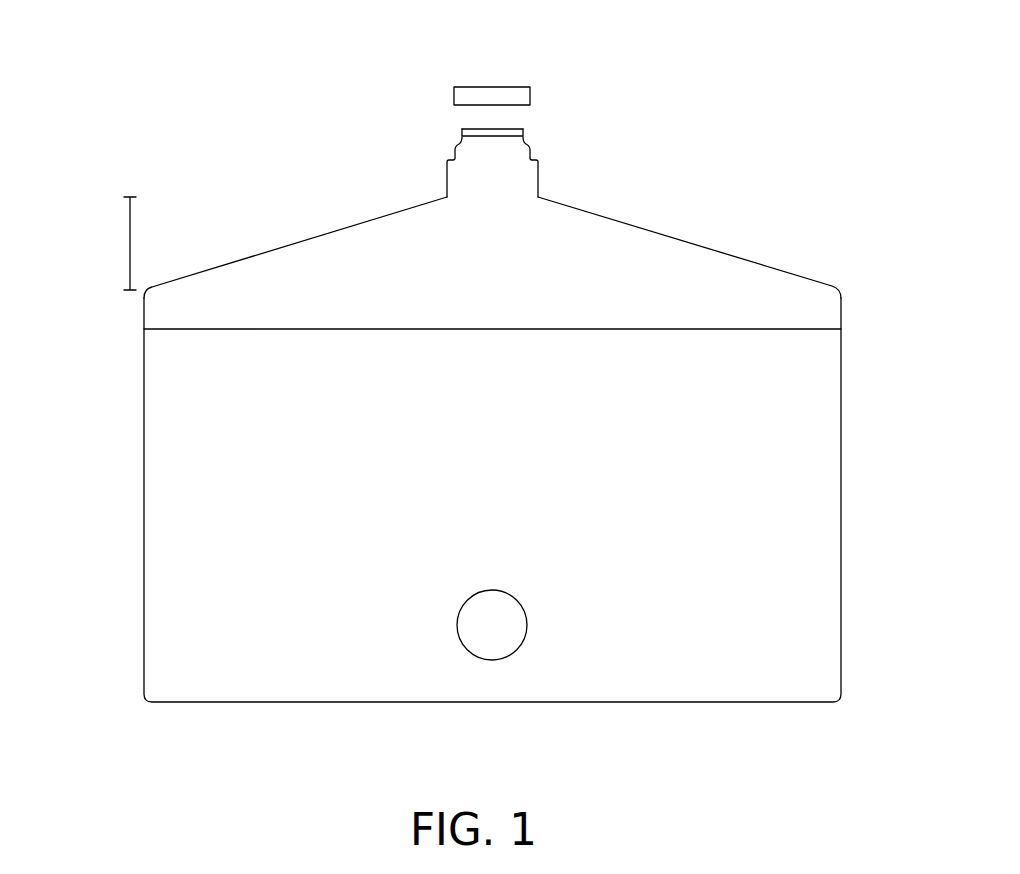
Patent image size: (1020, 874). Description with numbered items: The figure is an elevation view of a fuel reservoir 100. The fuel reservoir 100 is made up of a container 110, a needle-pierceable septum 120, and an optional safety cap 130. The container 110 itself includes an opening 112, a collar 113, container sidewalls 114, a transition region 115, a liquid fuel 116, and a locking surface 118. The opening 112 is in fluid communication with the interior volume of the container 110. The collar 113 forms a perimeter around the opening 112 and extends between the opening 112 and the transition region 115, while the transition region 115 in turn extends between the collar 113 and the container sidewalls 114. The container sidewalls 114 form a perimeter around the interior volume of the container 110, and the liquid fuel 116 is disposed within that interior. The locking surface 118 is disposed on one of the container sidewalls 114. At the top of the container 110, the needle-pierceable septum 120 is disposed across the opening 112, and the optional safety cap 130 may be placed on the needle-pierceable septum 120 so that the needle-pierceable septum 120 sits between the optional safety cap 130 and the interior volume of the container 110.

The fuel reservoir 100 is at (276, 176).
The container 110 is at (722, 252).
The opening 112 is at (525, 131).
The collar 113 is at (538, 178).
The container sidewalls 114 is at (143, 441).
The transition region 115 is at (129, 241).
The liquid fuel 116 is at (778, 328).
The locking surface 118 is at (465, 650).
The needle-pierceable septum 120 is at (472, 131).
The optional safety cap 130 is at (516, 92).